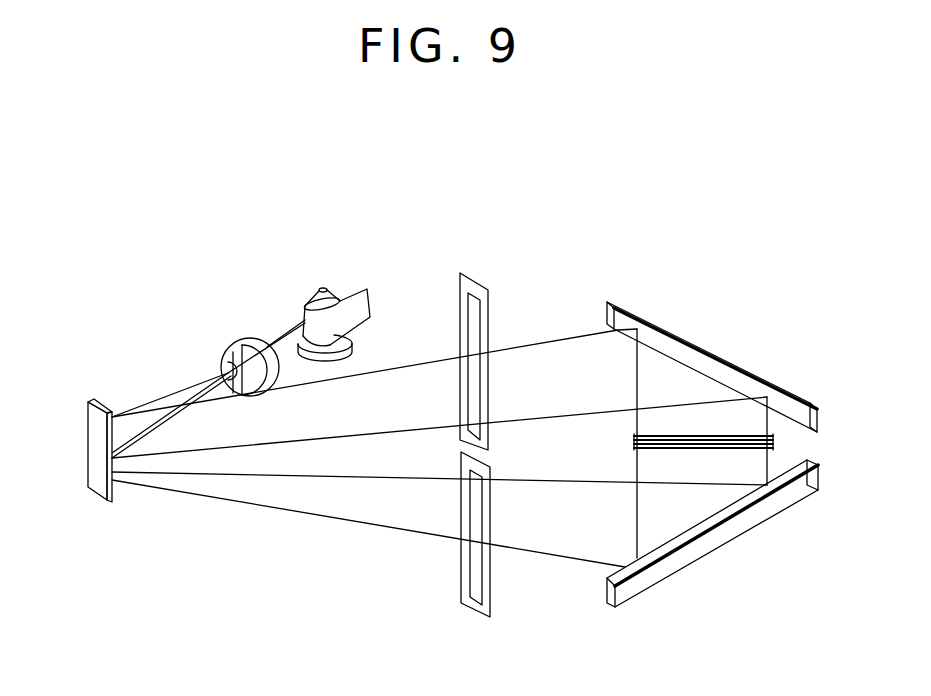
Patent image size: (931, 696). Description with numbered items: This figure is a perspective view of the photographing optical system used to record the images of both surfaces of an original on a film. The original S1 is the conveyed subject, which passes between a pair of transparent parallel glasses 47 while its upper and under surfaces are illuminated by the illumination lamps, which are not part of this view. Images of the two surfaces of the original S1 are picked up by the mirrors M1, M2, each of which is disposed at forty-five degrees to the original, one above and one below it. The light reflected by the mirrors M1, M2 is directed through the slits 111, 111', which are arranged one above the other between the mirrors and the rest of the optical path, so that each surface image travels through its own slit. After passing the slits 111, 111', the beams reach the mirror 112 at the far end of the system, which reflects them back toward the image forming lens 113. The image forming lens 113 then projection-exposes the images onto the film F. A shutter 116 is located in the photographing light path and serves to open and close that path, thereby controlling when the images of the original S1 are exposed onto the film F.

The mirror 112 is at (98, 485).
The image forming lens 113 is at (260, 347).
The shutter 116 is at (233, 351).
The film F is at (367, 312).
The slit 111 is at (509, 351).
The slit 111' is at (414, 534).
The transparent parallel glasses 47 is at (633, 437).
The original S1 is at (740, 447).
The mirror M1 is at (700, 365).
The mirror M2 is at (717, 535).